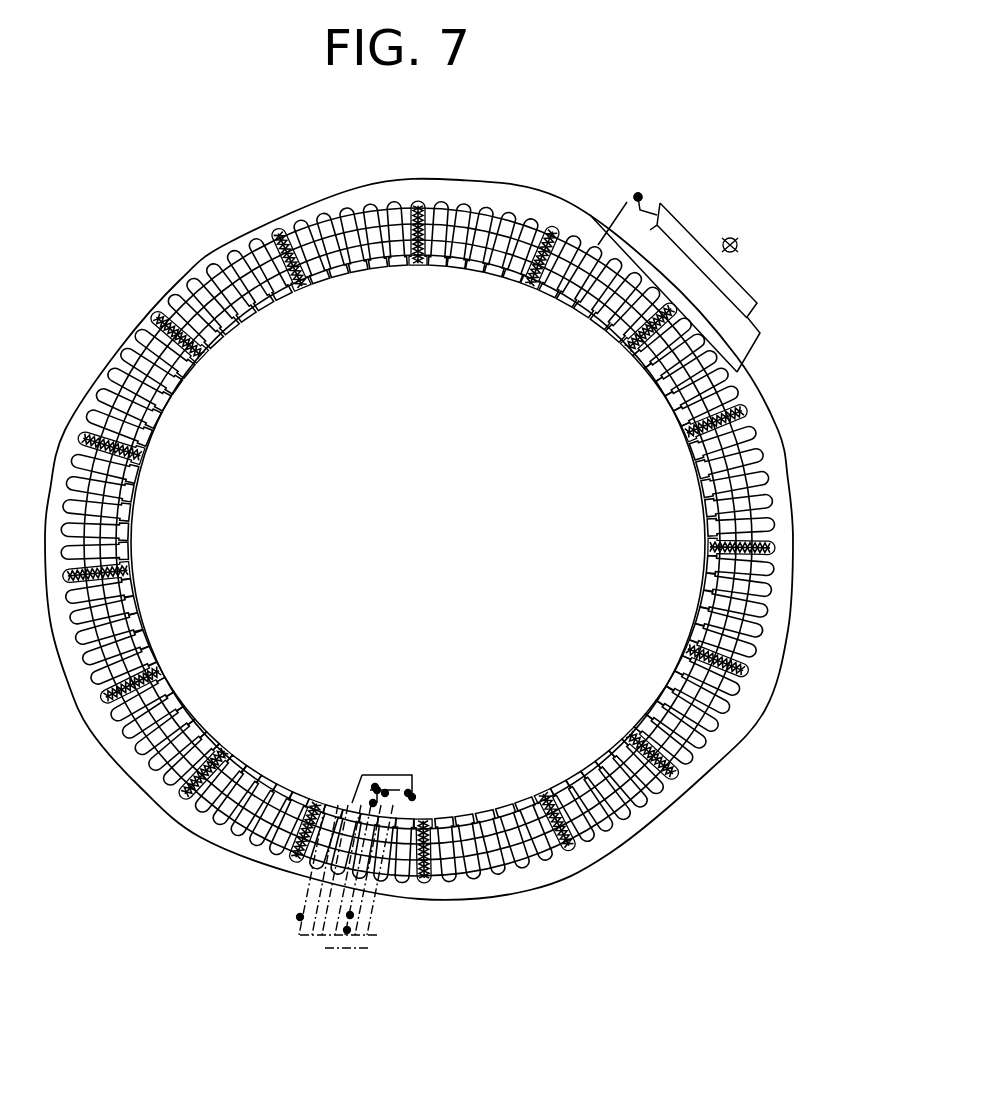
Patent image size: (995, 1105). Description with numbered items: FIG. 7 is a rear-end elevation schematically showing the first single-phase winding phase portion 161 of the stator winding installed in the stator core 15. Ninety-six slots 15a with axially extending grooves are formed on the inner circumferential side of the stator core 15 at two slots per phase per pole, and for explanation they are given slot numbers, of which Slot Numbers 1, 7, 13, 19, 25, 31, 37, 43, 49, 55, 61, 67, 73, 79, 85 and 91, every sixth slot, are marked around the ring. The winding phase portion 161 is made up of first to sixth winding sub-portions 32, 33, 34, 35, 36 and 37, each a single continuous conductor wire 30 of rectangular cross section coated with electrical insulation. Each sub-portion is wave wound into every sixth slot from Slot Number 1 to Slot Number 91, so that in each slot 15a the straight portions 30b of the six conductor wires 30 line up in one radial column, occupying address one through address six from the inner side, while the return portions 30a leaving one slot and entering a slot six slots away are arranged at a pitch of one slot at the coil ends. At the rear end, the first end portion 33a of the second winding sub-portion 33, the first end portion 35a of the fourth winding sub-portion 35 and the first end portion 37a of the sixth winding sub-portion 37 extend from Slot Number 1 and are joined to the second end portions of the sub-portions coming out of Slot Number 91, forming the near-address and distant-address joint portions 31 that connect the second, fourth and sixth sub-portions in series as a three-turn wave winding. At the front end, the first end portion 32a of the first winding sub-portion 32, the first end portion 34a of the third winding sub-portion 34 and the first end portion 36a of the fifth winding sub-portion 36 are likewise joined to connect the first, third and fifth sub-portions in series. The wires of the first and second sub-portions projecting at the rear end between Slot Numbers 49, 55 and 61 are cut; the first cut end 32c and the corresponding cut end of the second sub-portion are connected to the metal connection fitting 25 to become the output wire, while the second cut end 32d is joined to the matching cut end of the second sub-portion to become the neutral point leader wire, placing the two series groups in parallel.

The stator core 15 is at (226, 246).
The slots 15a is at (207, 290).
The continuous conductor wire 30 is at (130, 610).
The return portions 30a is at (147, 640).
The straight portions 30b is at (130, 560).
The first single-phase winding phase portion 161 is at (133, 510).
The slot number one 1 is at (310, 823).
The slot number seven 7 is at (206, 770).
The slot number thirteen 13 is at (143, 682).
The slot number nineteen 19 is at (113, 571).
The metal connection fitting 25 is at (764, 280).
The joint portion 31 is at (198, 347).
The sixth winding sub-portion 37 is at (200, 688).
The slot number forty-three 43 is at (422, 255).
The slot number forty-nine 49 is at (535, 274).
The slot number fifty-five 55 is at (638, 338).
The slot number sixty-one 61 is at (704, 432).
The slot number sixty-seven 67 is at (723, 551).
The slot number seventy-three 73 is at (705, 660).
The slot number seventy-nine 79 is at (637, 755).
The slot number eighty-five 85 is at (544, 815).
The slot number ninety-one 91 is at (424, 843).
The first winding sub-portion 32 is at (300, 803).
The second winding sub-portion 33 is at (210, 725).
The third winding sub-portion 34 is at (280, 807).
The fourth winding sub-portion 35 is at (205, 705).
The fifth winding sub-portion 36 is at (243, 787).
The first end portion of the sixth winding sub-portion 37a is at (375, 787).
The first end portion of the fourth winding sub-portion 35a is at (385, 793).
The first end portion of the second winding sub-portion 33a is at (412, 797).
The second cut end of the first winding sub-portion 32d is at (640, 195).
The first cut end of the first winding sub-portion 32c is at (745, 235).
The first end portion of the fifth winding sub-portion 36a is at (320, 942).
The first end portion of the first winding sub-portion 32a is at (350, 915).
The first end portion of the third winding sub-portion 34a is at (347, 930).